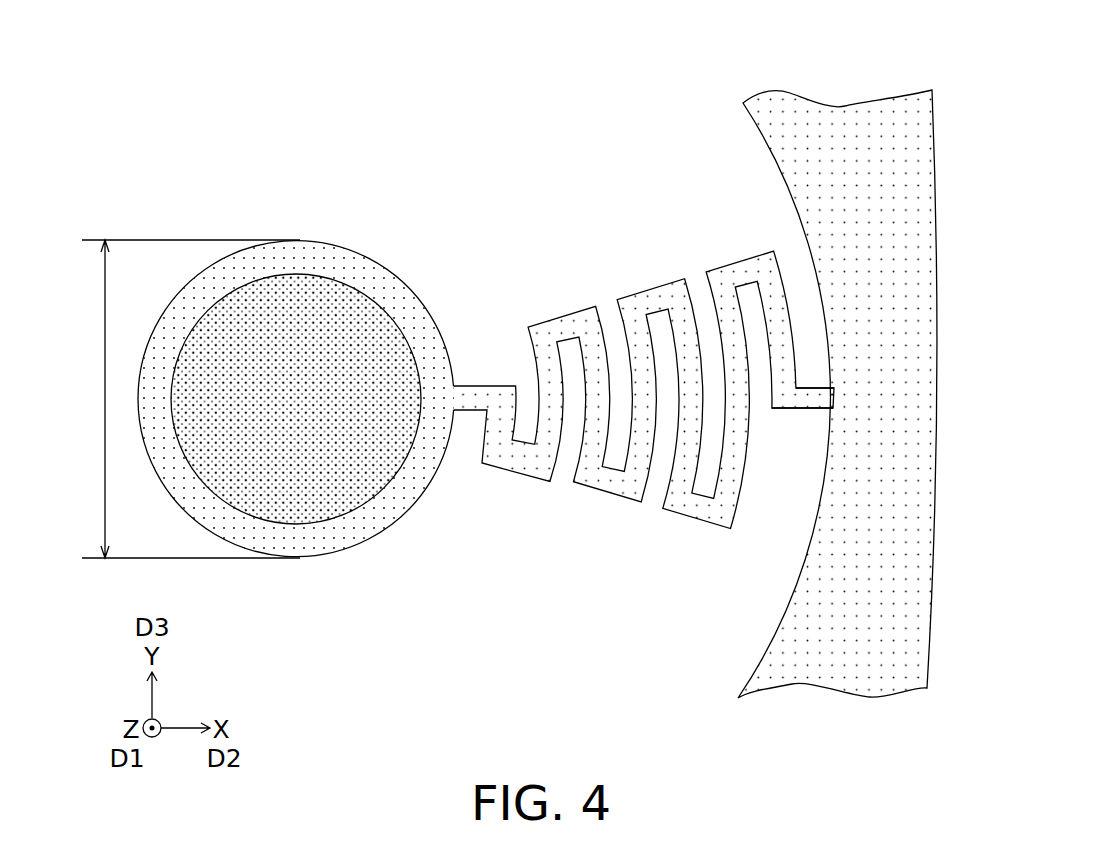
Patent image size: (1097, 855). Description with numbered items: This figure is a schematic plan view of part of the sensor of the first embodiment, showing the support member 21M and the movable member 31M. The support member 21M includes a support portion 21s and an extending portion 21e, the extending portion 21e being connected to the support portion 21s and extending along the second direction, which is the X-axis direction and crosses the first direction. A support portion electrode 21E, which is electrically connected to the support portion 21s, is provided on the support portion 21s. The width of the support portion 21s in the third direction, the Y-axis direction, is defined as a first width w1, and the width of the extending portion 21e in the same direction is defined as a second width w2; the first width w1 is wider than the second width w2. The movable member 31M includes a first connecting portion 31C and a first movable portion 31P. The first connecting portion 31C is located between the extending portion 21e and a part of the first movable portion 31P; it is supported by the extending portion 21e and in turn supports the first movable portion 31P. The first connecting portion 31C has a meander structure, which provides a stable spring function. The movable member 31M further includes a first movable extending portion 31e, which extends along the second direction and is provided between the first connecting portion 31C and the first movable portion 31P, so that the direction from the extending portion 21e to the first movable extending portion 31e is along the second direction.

The support portion electrode 21E is at (333, 318).
The support member 21M is at (337, 364).
The support portion 21s is at (430, 303).
The extending portion 21e is at (476, 419).
The first connecting portion 31C is at (807, 553).
The first movable extending portion 31e is at (800, 402).
The movable member 31M is at (675, 400).
The first movable portion 31P is at (835, 123).
The first width w1 is at (180, 399).
The second width w2 is at (457, 410).